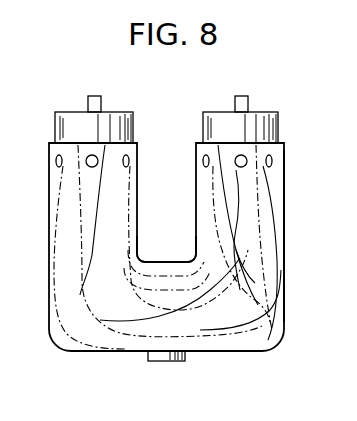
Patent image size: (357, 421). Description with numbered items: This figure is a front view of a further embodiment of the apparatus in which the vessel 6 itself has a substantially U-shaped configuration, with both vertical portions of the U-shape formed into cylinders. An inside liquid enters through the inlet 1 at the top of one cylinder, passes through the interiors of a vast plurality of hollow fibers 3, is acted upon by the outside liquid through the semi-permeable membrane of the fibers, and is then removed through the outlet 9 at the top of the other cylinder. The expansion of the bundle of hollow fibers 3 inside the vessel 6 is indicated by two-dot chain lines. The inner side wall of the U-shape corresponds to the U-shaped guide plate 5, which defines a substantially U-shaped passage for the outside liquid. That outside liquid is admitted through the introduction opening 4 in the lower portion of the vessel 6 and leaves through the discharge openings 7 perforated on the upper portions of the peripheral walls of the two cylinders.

The inlet 1 is at (102, 98).
The outlet 9 is at (248, 98).
The discharge openings 7 is at (272, 160).
The vessel 6 is at (285, 236).
The hollow fibers 3 is at (266, 280).
The U-shaped guide plate 5 is at (139, 238).
The introduction opening 4 is at (157, 362).